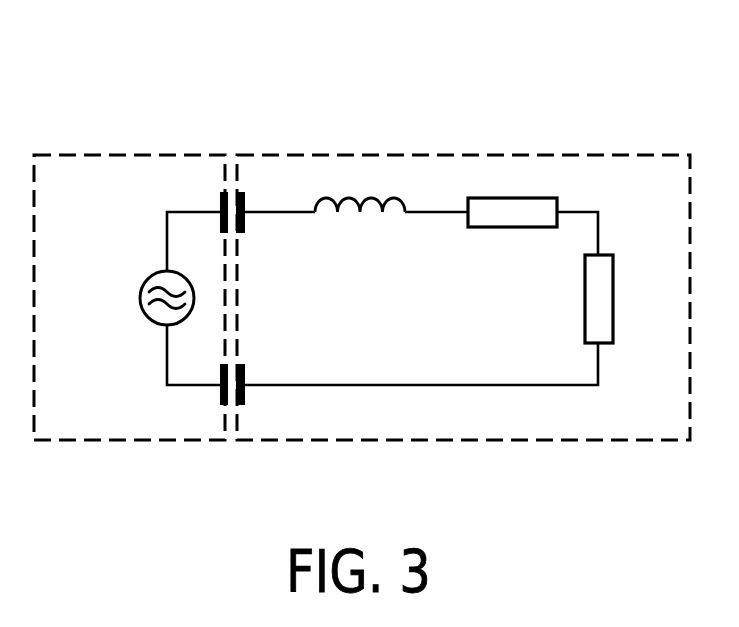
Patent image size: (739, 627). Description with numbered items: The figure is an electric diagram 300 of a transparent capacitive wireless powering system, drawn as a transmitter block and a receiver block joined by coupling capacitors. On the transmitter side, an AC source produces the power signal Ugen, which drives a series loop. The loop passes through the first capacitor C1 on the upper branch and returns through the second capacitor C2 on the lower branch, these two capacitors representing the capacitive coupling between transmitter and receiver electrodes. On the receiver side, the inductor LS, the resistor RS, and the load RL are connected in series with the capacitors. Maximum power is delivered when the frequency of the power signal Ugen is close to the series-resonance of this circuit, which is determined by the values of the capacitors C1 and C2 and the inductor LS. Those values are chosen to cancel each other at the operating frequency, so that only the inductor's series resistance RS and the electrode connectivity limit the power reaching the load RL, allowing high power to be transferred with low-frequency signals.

The electric diagram 300 is at (362, 231).
The power signal Ugen is at (123, 268).
The first capacitor C1 is at (254, 230).
The second capacitor C2 is at (254, 401).
The inductor LS is at (360, 232).
The resistor RS is at (512, 232).
The load RL is at (620, 299).